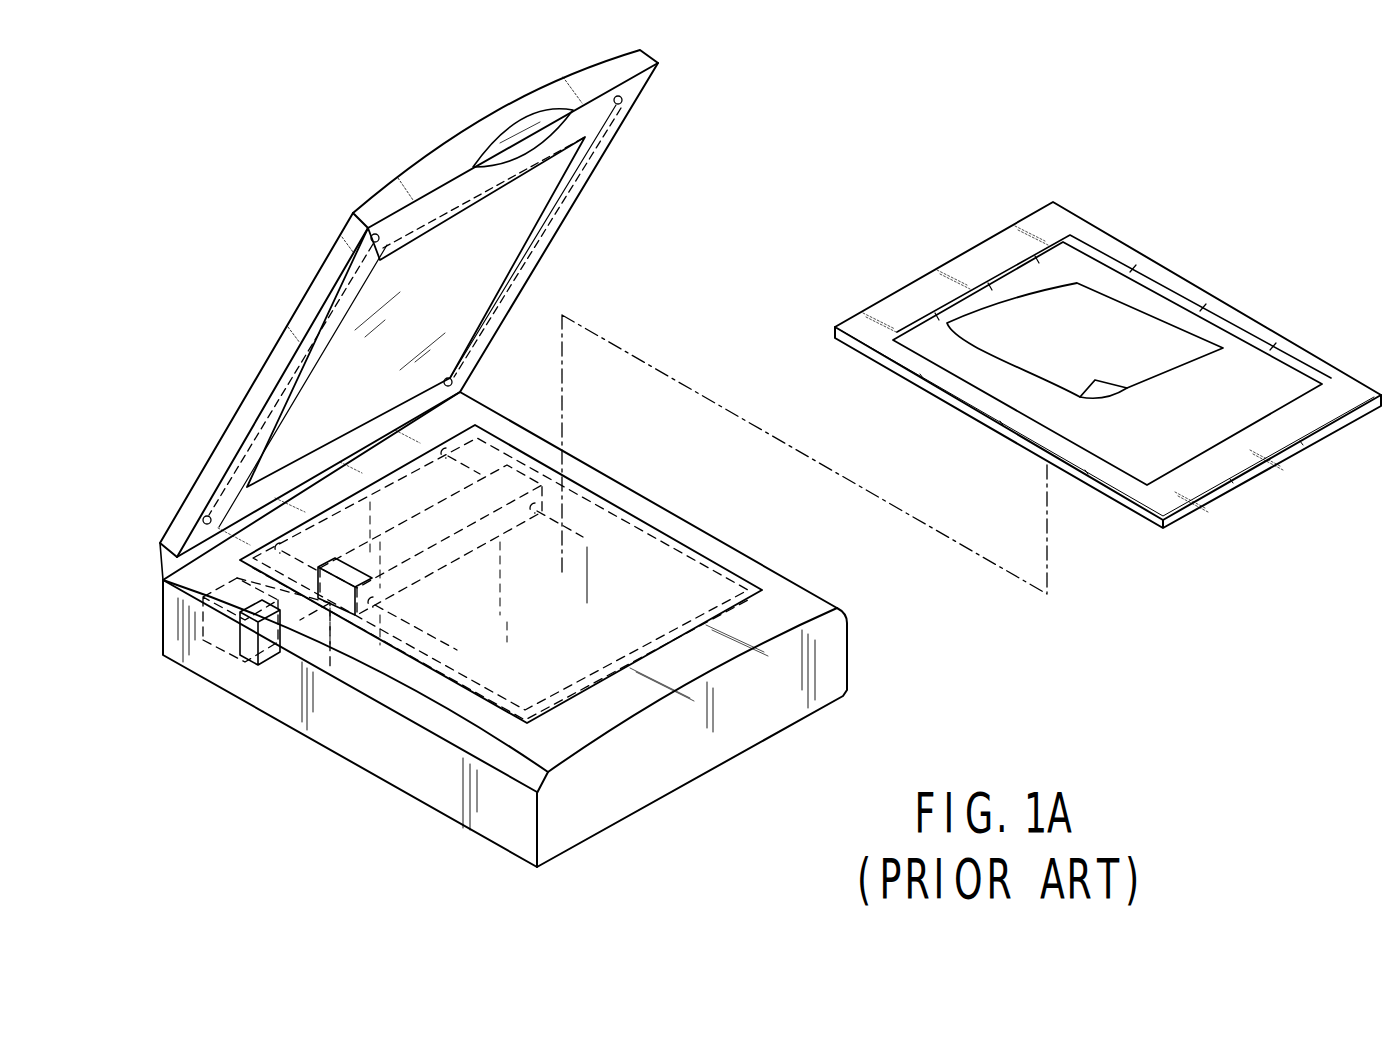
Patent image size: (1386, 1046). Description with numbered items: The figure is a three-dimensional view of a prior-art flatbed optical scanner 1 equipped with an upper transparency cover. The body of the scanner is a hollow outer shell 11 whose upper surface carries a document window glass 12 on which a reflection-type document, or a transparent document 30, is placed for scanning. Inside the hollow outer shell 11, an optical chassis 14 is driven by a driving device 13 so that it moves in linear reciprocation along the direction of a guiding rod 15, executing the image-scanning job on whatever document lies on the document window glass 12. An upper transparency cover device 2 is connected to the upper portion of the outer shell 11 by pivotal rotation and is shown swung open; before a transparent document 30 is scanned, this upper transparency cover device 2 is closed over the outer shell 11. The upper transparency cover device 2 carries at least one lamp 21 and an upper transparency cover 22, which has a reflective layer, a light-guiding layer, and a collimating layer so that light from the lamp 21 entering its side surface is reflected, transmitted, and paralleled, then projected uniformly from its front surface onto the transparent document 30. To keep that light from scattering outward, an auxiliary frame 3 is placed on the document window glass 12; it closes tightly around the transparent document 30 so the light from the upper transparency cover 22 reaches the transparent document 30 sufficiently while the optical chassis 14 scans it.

The optical scanner 1 is at (318, 766).
The outer shell 11 is at (797, 602).
The document window glass 12 is at (625, 507).
The driving device 13 is at (217, 637).
The optical chassis 14 is at (535, 452).
The guiding rod 15 is at (613, 550).
The upper transparency cover device 2 is at (255, 335).
The lamp 21 is at (332, 268).
The upper transparency cover 22 is at (467, 223).
The auxiliary frame 3 is at (1180, 285).
The transparent document 30 is at (1083, 293).